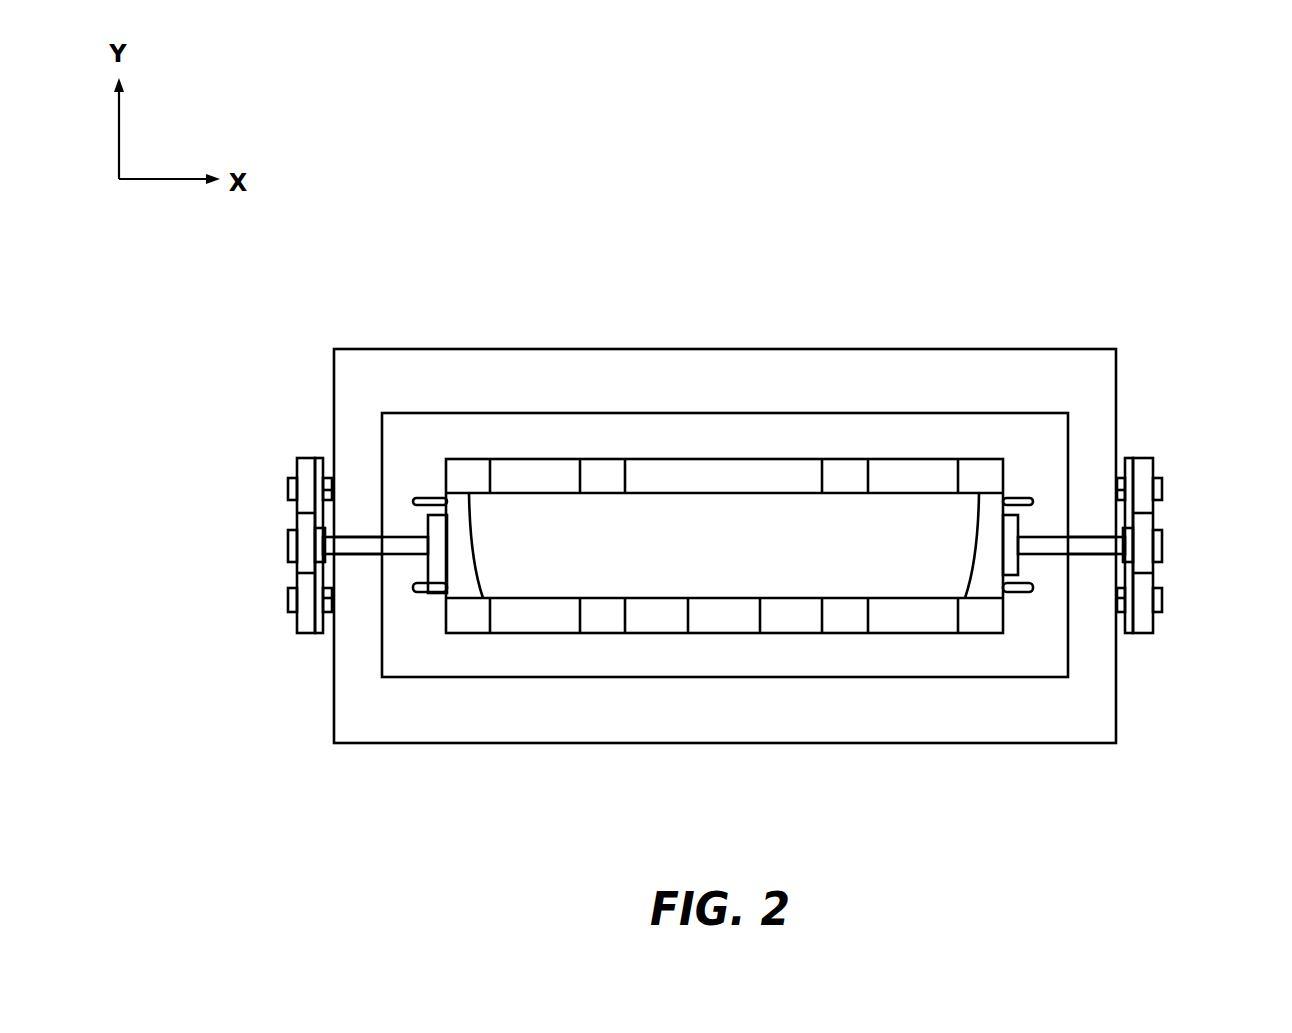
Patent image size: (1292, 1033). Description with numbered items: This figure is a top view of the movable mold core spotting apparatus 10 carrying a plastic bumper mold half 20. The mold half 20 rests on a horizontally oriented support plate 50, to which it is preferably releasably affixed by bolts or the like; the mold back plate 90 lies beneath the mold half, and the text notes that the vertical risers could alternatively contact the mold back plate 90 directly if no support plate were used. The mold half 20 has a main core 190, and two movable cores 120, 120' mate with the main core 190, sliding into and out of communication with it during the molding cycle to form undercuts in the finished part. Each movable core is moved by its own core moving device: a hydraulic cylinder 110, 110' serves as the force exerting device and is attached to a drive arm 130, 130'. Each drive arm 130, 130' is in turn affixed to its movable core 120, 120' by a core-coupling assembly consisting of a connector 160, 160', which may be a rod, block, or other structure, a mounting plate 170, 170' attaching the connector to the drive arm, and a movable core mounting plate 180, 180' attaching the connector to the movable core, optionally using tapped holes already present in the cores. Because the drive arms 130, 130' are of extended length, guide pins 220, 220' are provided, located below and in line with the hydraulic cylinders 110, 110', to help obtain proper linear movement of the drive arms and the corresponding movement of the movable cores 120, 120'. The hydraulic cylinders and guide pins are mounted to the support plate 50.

The movable mold core spotting apparatus 10 is at (1140, 200).
The mold half 20 is at (707, 700).
The support plate 50 is at (726, 375).
The mold back plate 90 is at (591, 430).
The hydraulic cylinder 110 is at (237, 548).
The hydraulic cylinder 110' is at (1214, 548).
The movable core 120 is at (448, 665).
The movable core 120' is at (999, 665).
The drive arm 130 is at (272, 591).
The drive arm 130' is at (1180, 591).
The connector 160 is at (322, 418).
The connector 160' is at (1133, 418).
The mounting plate 170 is at (307, 509).
The mounting plate 170' is at (1143, 509).
The movable core mounting plate 180 is at (396, 676).
The movable core mounting plate 180' is at (1055, 676).
The main core 190 is at (843, 507).
The guide pin 220 is at (245, 513).
The guide pin 220' is at (1209, 512).